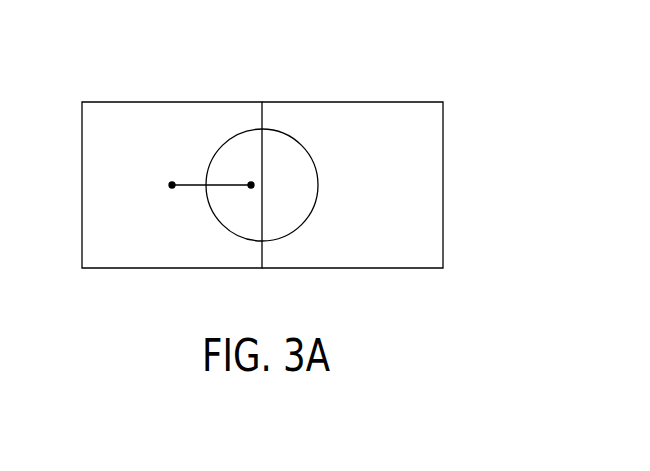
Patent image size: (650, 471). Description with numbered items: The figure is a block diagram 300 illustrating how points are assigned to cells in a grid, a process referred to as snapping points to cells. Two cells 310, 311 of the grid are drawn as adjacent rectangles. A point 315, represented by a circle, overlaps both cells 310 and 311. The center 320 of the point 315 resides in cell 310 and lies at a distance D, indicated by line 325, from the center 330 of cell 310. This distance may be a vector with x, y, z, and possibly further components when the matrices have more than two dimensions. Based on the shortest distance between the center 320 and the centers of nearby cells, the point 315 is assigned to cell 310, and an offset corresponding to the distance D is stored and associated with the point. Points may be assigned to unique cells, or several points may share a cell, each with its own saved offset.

The block diagram 300 is at (402, 42).
The cell 310 is at (140, 102).
The cell 311 is at (374, 102).
The point 315 is at (309, 152).
The center of the point 320 is at (250, 188).
The line 325 is at (184, 185).
The center of the cell 330 is at (170, 188).